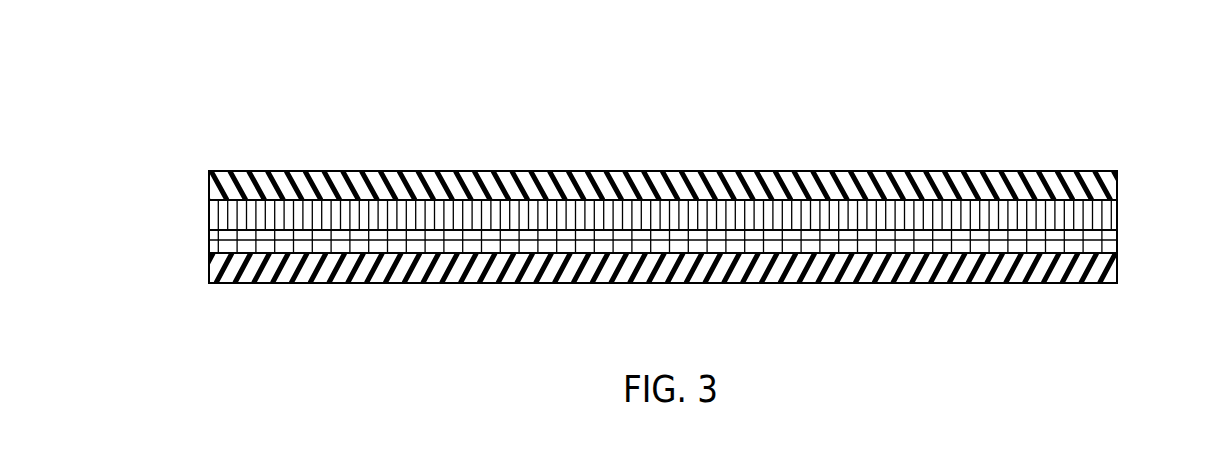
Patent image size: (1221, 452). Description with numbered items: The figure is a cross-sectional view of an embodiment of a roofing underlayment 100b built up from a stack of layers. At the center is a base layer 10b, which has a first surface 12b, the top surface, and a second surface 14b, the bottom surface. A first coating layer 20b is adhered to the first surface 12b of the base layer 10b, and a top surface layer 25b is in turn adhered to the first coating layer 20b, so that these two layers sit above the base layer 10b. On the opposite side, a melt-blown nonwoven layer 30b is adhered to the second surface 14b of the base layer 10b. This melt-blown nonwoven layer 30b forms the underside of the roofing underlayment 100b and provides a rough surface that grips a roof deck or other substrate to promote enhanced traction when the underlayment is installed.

The roofing underlayment 100b is at (650, 195).
The top surface layer 25b is at (230, 171).
The first coating layer 20b is at (650, 199).
The first surface 12b is at (237, 229).
The base layer 10b is at (715, 287).
The second surface 14b is at (940, 254).
The melt-blown nonwoven layer 30b is at (250, 283).